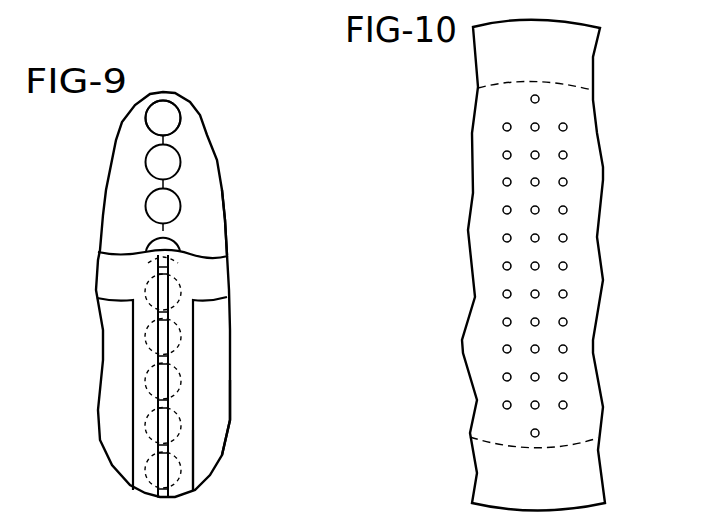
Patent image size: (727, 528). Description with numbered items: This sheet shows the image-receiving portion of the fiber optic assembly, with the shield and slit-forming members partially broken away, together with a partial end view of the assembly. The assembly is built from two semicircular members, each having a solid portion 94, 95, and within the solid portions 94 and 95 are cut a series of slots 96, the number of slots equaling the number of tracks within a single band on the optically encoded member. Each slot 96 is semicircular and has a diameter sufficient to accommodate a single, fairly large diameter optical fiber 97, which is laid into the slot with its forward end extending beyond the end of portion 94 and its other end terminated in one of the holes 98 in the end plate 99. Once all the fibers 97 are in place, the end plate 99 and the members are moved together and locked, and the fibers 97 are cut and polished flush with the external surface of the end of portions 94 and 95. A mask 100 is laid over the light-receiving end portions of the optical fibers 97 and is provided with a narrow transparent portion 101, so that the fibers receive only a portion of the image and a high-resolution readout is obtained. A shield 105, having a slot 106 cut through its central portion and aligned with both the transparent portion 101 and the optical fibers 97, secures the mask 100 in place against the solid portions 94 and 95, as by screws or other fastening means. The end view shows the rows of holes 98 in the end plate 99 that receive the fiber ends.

In FIG. 9, the solid portion 94 is at (117, 197).
In FIG. 9, the solid portion 95 is at (208, 200).
In FIG. 9, the slots 96 is at (145, 124).
In FIG. 9, the optical fiber 97 is at (167, 115).
In FIG. 10, the holes 98 is at (567, 208).
In FIG. 10, the end plate 99 is at (585, 57).
In FIG. 9, the mask 100 is at (217, 285).
In FIG. 9, the transparent portion 101 is at (168, 272).
In FIG. 9, the shield 105 is at (223, 397).
In FIG. 9, the slot 106 is at (189, 441).